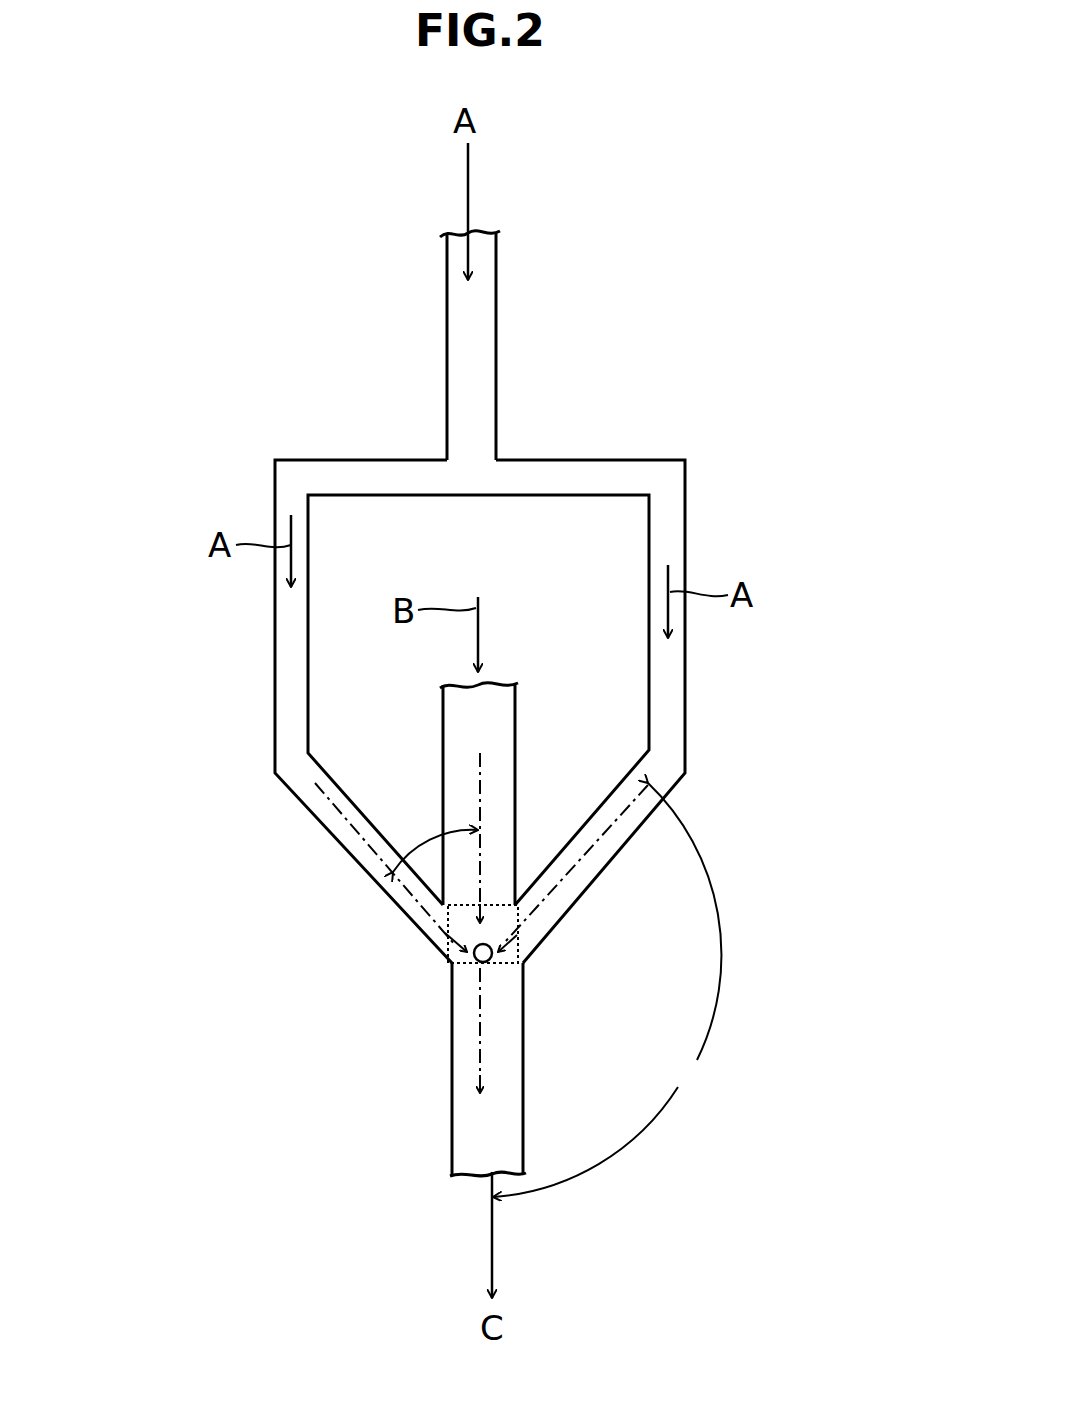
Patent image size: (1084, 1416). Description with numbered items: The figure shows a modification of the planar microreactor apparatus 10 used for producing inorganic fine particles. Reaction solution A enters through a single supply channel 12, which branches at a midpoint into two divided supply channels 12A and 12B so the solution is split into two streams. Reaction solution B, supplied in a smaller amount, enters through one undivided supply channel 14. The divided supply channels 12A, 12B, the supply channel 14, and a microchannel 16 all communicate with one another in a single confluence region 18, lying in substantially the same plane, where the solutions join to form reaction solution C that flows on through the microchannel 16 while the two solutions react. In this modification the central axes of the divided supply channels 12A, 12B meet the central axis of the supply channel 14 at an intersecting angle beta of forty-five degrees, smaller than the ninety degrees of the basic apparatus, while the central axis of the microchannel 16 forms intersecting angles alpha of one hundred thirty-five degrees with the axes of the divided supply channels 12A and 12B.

The microreactor apparatus 10 is at (742, 343).
The supply channel 12 is at (482, 313).
The divided supply channel 12A is at (675, 512).
The divided supply channel 12B is at (281, 655).
The supply channel 14 is at (500, 782).
The microchannel 16 is at (460, 1057).
The confluence region 18 is at (493, 962).